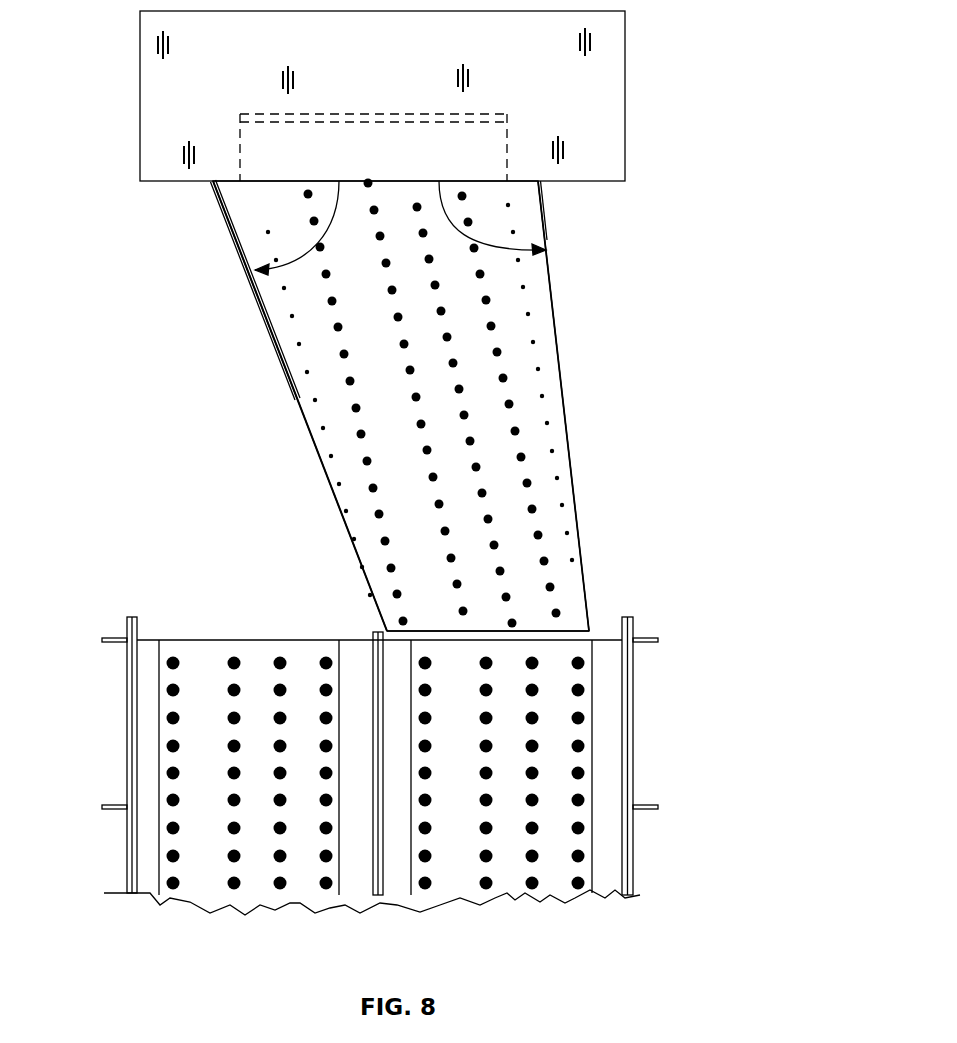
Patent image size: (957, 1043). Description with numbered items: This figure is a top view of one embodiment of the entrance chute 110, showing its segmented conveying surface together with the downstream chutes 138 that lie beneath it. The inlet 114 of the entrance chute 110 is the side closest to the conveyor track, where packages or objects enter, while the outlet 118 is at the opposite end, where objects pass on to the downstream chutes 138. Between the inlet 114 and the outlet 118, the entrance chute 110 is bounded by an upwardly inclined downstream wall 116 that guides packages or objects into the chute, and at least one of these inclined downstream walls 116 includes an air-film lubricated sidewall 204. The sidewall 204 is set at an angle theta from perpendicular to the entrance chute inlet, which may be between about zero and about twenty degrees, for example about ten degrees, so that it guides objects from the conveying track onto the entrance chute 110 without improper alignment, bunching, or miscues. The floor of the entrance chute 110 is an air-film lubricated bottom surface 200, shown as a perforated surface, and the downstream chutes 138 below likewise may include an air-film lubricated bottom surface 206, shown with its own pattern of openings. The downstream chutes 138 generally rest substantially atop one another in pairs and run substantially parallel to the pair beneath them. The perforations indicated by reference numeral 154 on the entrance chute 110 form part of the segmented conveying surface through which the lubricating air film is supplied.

The entrance chute 110 is at (630, 361).
The inlet 114 is at (330, 213).
The upwardly inclined downstream wall 116 is at (553, 290).
The outlet 118 is at (480, 631).
The downstream chutes 138 is at (257, 907).
The fastener holes 154 is at (535, 498).
The air-film lubricated bottom surface 200 is at (383, 442).
The air-film lubricated sidewall 204 is at (293, 330).
The air-film lubricated bottom surface 206 is at (253, 883).